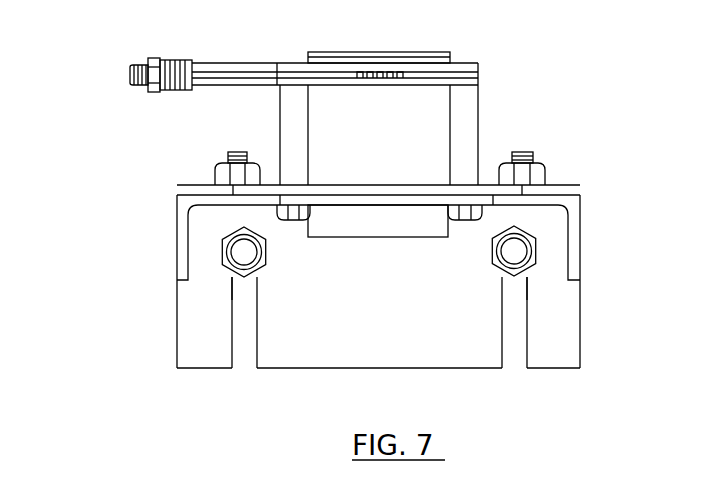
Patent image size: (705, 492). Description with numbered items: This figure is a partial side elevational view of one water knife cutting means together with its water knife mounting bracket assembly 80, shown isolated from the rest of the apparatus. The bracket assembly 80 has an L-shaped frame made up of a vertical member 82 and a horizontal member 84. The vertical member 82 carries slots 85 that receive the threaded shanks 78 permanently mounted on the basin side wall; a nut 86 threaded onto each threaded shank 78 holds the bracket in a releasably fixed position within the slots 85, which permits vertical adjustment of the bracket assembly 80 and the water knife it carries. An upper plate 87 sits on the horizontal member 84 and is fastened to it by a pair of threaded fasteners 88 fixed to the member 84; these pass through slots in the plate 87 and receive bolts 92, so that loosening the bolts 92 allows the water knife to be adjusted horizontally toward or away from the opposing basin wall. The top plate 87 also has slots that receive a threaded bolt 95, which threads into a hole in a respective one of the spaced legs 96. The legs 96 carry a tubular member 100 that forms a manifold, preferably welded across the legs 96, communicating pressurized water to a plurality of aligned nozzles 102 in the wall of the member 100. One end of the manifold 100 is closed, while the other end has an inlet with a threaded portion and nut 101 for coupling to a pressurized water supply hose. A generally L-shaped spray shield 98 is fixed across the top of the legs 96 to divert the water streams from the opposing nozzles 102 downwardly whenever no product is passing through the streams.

The threaded shank 78 is at (251, 253).
The water knife mounting bracket assembly 80 is at (593, 366).
The vertical member 82 is at (377, 358).
The horizontal member 84 is at (178, 240).
The slot 85 is at (243, 355).
The nut 86 is at (227, 272).
The upper plate 87 is at (358, 183).
The threaded fastener 88 is at (223, 153).
The bolt 92 is at (213, 174).
The threaded bolt 95 is at (295, 221).
The leg 96 is at (280, 106).
The spray shield 98 is at (412, 52).
The tubular member 100 is at (228, 62).
The threaded portion and nut 101 is at (155, 57).
The nozzle 102 is at (355, 76).